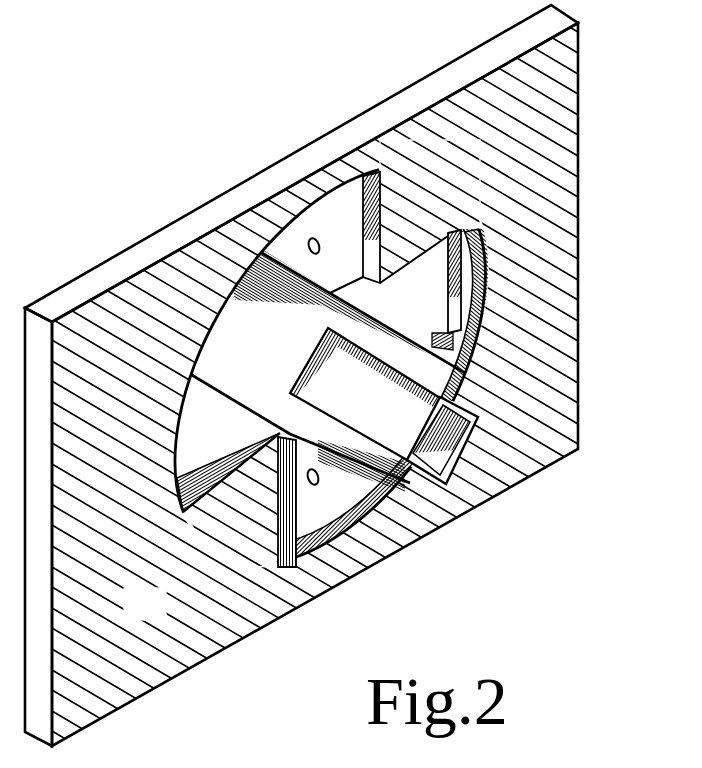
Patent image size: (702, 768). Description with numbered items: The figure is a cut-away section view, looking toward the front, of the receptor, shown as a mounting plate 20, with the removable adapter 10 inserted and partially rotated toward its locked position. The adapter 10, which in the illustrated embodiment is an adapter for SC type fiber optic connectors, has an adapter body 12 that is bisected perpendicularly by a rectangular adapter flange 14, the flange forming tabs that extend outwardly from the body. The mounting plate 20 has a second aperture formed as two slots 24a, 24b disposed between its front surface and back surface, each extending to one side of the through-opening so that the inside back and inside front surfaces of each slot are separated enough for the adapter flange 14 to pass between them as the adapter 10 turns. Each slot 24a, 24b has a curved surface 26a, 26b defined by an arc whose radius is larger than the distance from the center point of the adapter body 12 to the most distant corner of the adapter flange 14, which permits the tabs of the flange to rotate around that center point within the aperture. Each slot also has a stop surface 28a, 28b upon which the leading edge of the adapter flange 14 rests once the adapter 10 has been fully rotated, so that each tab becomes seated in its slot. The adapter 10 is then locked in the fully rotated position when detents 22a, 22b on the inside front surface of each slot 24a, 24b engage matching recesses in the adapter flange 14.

The adapter 10 is at (278, 376).
The adapter body 12 is at (470, 410).
The adapter flange 14 is at (284, 231).
The mounting plate 20 is at (158, 618).
The detent 22a is at (289, 256).
The detent 22b is at (305, 470).
The slot 24a is at (342, 238).
The slot 24b is at (365, 501).
The curved surface 26a is at (140, 385).
The curved surface 26b is at (377, 513).
The stop surface 28a is at (365, 240).
The stop surface 28b is at (278, 517).